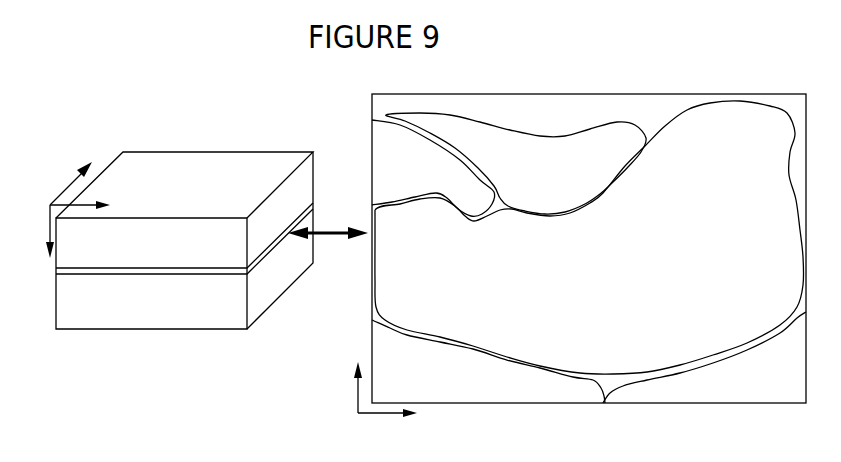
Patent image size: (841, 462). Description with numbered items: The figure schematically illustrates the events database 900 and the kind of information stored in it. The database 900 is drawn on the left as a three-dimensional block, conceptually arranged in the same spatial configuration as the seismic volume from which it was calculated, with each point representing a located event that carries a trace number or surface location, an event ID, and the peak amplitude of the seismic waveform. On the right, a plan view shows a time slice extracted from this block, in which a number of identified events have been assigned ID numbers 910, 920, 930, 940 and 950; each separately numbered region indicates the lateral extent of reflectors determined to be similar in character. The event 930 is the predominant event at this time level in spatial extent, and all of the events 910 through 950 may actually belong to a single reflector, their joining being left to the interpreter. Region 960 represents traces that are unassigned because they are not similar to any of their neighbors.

The events database 900 is at (200, 120).
The unassigned region 960 is at (569, 113).
The event ID 910 region 910 is at (516, 163).
The event ID 920 region 920 is at (433, 168).
The event ID 930 region 930 is at (589, 237).
The event ID 940 region 940 is at (488, 361).
The event ID 950 region 950 is at (704, 357).